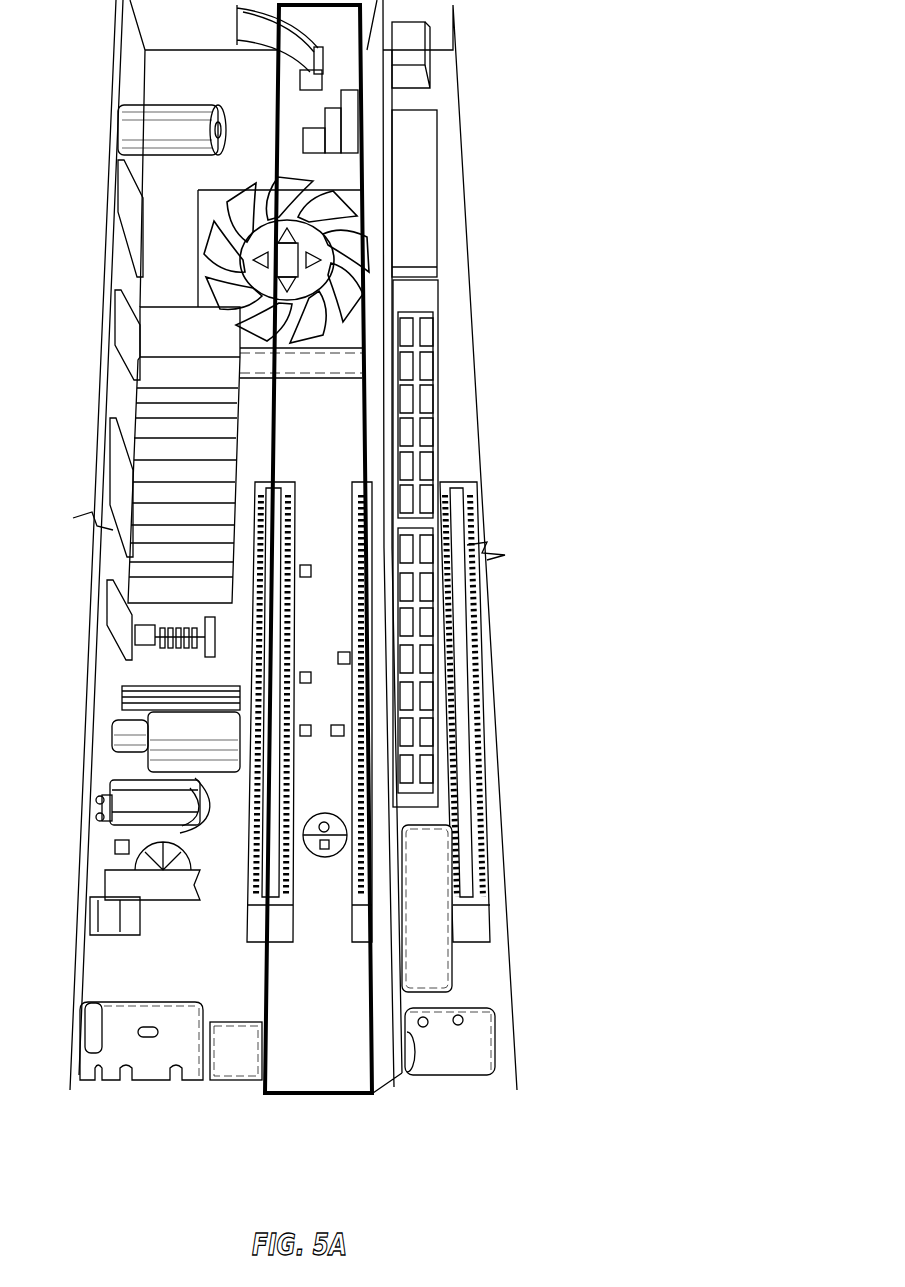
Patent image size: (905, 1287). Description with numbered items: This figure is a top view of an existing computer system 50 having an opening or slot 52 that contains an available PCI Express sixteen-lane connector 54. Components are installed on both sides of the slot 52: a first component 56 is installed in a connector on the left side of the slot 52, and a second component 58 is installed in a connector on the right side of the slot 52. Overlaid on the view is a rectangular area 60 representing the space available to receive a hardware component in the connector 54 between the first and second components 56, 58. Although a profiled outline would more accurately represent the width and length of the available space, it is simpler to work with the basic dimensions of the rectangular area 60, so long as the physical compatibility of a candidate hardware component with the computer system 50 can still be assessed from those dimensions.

The computer system 50 is at (556, 90).
The slot 52 is at (344, 1102).
The PCI Express 16X connector 54 is at (260, 907).
The first component 56 is at (145, 1078).
The second component 58 is at (447, 1080).
The rectangular area 60 is at (287, 1095).